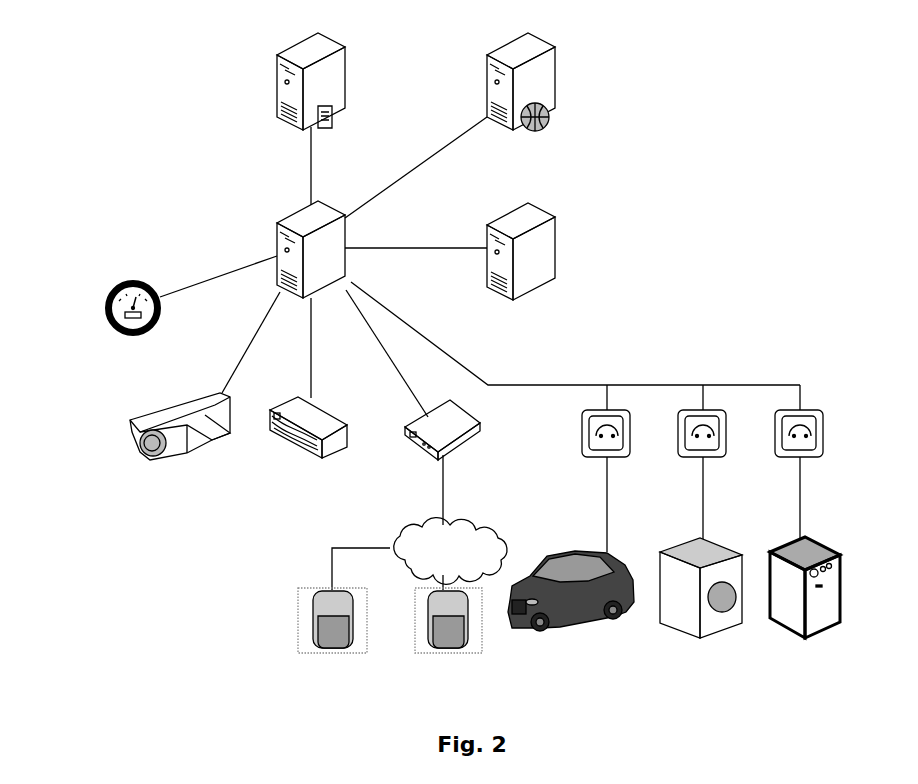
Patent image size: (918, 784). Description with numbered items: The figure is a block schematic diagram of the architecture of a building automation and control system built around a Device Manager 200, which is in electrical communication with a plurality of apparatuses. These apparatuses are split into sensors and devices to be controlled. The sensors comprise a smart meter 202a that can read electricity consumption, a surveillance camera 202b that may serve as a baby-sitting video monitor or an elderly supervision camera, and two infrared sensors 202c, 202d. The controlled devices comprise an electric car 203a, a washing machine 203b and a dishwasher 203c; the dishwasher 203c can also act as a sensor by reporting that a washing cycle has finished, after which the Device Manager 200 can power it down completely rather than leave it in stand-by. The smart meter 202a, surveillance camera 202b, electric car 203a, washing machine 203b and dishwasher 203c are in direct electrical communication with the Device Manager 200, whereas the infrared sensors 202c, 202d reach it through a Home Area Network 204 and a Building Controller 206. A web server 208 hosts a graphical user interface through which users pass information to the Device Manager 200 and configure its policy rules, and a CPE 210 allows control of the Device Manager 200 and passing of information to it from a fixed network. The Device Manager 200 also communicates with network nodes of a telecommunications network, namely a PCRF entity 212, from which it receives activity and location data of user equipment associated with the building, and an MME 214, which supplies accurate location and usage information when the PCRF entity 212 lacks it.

The Device Manager 200 is at (283, 227).
The PCRF entity 212 is at (280, 78).
The web server 208 is at (548, 82).
The MME 214 is at (553, 248).
The smart meter 202a is at (112, 284).
The surveillance camera 202b is at (132, 420).
The infrared sensor 202c is at (312, 615).
The infrared sensor 202d is at (430, 625).
The CPE 210 is at (270, 456).
The Building Controller 206 is at (427, 418).
The Home Area Network 204 is at (410, 537).
The electric car 203a is at (580, 552).
The washing machine 203b is at (690, 540).
The dishwasher 203c is at (790, 540).